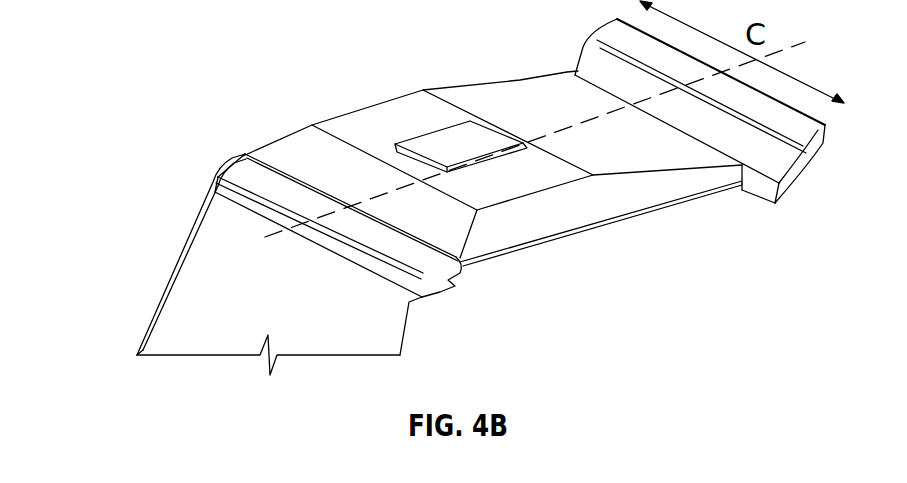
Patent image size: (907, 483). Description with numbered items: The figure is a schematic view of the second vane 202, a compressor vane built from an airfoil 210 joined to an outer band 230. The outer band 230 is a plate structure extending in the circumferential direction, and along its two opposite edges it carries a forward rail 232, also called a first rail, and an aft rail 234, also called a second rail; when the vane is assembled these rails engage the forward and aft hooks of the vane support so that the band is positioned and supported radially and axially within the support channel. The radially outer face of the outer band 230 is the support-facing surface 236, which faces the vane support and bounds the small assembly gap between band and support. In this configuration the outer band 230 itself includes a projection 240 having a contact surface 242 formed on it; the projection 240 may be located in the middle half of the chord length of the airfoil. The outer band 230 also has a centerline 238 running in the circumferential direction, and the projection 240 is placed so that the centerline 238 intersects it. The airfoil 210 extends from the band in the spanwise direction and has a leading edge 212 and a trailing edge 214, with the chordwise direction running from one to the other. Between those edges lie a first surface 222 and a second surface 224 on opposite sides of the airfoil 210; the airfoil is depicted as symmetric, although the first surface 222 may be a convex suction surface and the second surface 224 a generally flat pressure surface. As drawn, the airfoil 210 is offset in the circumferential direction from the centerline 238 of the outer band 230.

The second vane 202 is at (600, 213).
The airfoil 210 is at (333, 333).
The leading edge 212 is at (147, 343).
The trailing edge 214 is at (407, 328).
The first surface 222 is at (295, 301).
The second surface 224 is at (178, 254).
The outer band 230 is at (520, 233).
The forward rail 232 is at (443, 274).
The aft rail 234 is at (793, 165).
The support-facing surface 236 is at (357, 178).
The centerline 238 is at (805, 42).
The projection 240 is at (450, 138).
The contact surface 242 is at (425, 140).